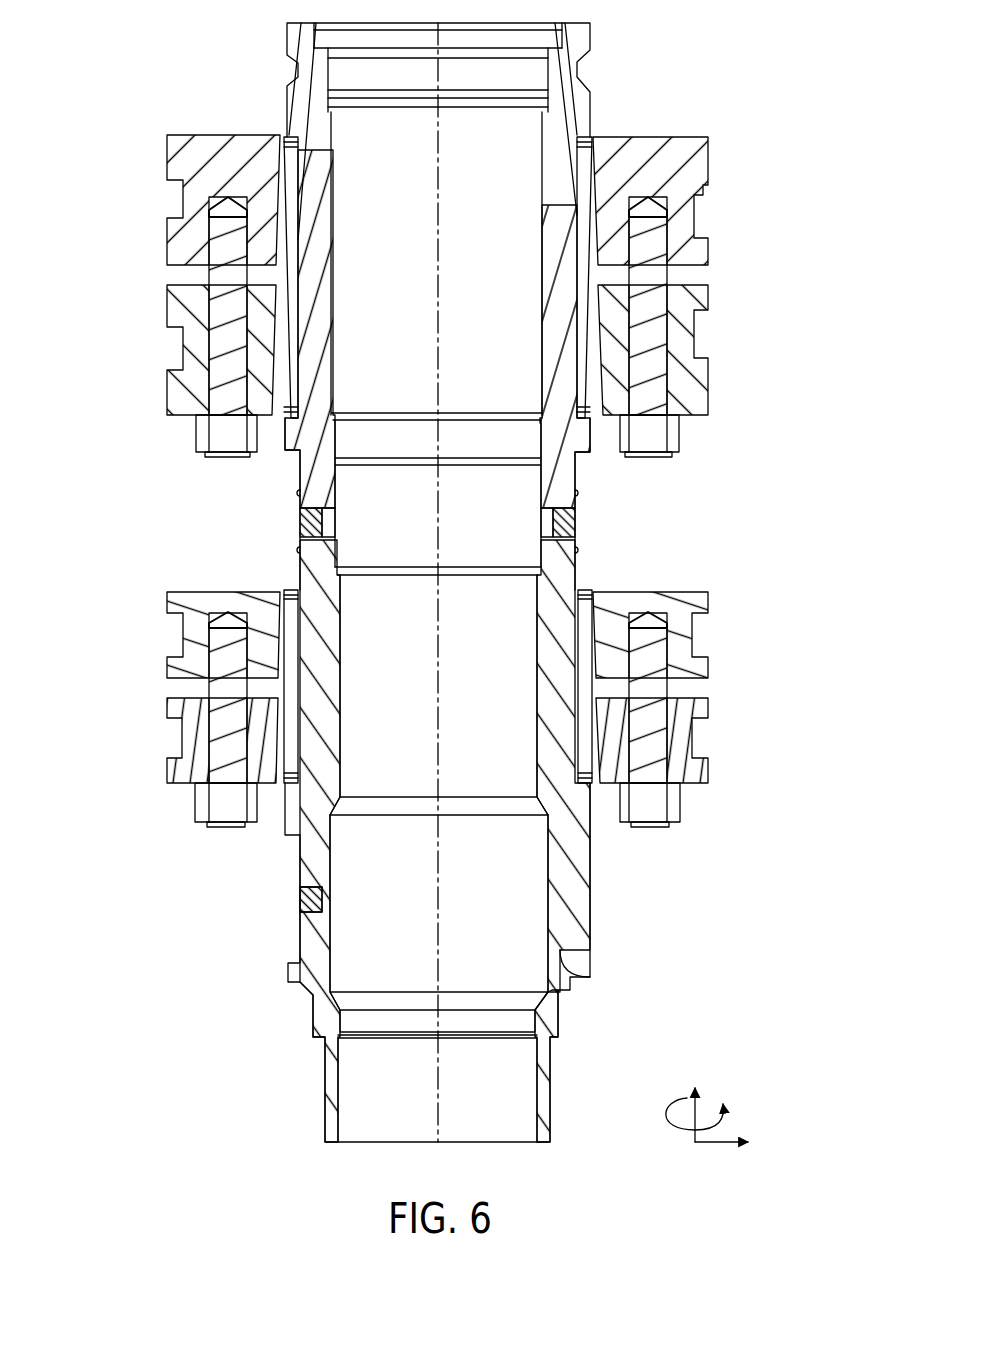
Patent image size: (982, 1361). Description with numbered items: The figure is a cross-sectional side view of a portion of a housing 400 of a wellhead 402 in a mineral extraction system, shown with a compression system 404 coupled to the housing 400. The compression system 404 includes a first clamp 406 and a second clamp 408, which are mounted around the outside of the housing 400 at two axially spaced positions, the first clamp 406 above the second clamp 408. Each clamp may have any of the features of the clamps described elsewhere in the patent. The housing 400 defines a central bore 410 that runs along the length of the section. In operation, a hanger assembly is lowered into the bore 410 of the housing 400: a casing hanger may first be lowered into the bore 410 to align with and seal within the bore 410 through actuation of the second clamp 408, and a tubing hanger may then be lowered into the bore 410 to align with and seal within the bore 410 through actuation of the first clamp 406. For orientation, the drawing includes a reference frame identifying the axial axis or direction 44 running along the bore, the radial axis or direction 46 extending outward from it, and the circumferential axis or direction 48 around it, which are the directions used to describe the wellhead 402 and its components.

The housing 400 is at (296, 93).
The wellhead 402 is at (374, 254).
The compression system 404 is at (143, 178).
The first clamp 406 is at (143, 328).
The second clamp 408 is at (143, 625).
The bore 410 is at (409, 226).
The axial axis 44 is at (688, 1102).
The radial axis 46 is at (720, 1144).
The circumferential axis 48 is at (678, 1127).